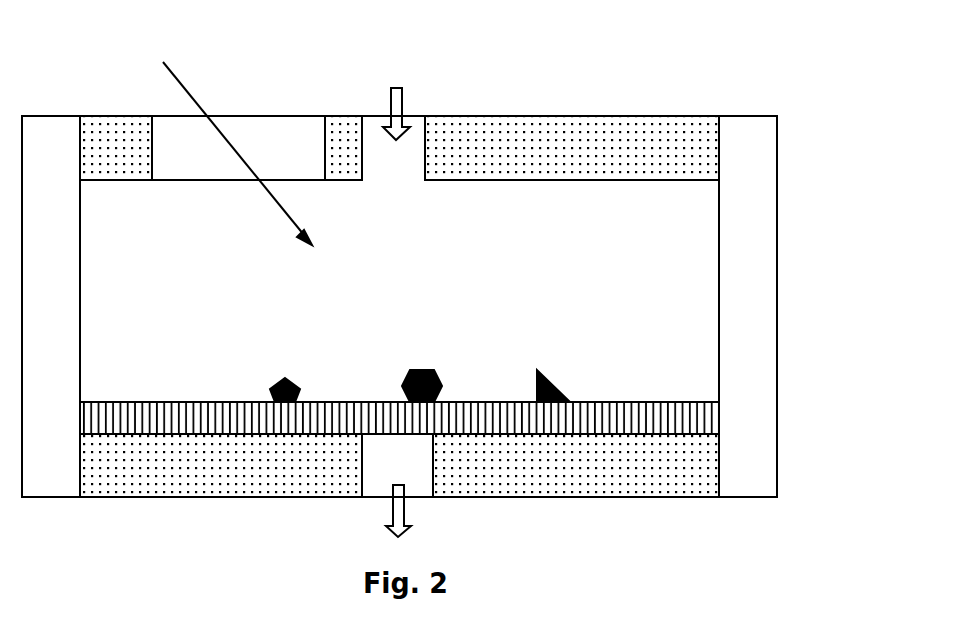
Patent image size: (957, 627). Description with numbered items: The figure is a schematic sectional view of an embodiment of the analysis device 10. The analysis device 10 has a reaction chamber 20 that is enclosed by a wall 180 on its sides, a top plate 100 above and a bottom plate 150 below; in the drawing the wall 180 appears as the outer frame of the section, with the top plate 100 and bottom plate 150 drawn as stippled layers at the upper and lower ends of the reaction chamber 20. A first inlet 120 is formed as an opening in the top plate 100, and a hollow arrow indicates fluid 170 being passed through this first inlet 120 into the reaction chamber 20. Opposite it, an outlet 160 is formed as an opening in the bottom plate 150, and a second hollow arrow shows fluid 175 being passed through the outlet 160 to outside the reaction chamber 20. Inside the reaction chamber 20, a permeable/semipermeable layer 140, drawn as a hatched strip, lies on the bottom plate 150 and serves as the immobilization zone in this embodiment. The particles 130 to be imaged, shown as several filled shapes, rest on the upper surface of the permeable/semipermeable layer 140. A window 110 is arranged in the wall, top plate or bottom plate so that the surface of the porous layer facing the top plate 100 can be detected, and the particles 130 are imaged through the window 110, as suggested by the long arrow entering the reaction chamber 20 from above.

The analysis device 10 is at (765, 58).
The reaction chamber 20 is at (683, 277).
The top plate 100 is at (680, 163).
The window 110 is at (256, 143).
The first inlet 120 is at (413, 163).
The particles 130 is at (283, 378).
The permeable/semipermeable layer 140 is at (697, 416).
The bottom plate 150 is at (672, 461).
The outlet 160 is at (420, 468).
The fluid 170 is at (395, 108).
The fluid 175 is at (398, 508).
The wall 180 is at (753, 235).